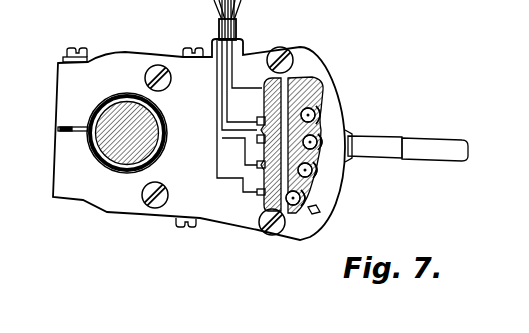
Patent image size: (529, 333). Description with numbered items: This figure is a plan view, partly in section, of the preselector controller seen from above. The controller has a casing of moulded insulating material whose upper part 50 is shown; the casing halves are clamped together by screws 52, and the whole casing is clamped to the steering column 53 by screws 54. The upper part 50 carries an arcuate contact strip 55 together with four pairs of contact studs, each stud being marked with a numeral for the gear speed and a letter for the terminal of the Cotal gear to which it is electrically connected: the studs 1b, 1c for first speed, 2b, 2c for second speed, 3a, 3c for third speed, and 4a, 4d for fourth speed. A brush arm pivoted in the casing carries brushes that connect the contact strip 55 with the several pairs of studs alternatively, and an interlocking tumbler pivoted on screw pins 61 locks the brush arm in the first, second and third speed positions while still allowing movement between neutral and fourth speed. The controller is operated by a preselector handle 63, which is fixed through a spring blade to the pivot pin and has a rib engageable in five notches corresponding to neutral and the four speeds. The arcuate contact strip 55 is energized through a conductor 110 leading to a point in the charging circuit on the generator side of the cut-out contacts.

The upper part 50 is at (312, 53).
The screws 52 is at (272, 235).
The steering column 53 is at (107, 92).
The screws 54 is at (88, 56).
The arcuate contact strip 55 is at (277, 92).
The screw pins 61 is at (190, 230).
The preselector handle 63 is at (448, 144).
The conductor 110 is at (242, 5).
The contact stud 1b is at (333, 210).
The contact stud 1c is at (333, 200).
The contact stud 2b is at (325, 178).
The contact stud 2c is at (330, 168).
The contact stud 3a is at (318, 143).
The contact stud 3c is at (326, 136).
The contact stud 4a is at (316, 116).
The contact stud 4d is at (282, 100).